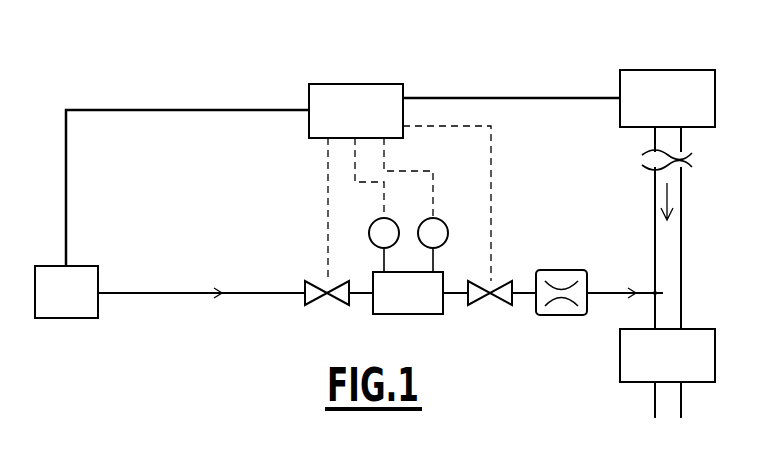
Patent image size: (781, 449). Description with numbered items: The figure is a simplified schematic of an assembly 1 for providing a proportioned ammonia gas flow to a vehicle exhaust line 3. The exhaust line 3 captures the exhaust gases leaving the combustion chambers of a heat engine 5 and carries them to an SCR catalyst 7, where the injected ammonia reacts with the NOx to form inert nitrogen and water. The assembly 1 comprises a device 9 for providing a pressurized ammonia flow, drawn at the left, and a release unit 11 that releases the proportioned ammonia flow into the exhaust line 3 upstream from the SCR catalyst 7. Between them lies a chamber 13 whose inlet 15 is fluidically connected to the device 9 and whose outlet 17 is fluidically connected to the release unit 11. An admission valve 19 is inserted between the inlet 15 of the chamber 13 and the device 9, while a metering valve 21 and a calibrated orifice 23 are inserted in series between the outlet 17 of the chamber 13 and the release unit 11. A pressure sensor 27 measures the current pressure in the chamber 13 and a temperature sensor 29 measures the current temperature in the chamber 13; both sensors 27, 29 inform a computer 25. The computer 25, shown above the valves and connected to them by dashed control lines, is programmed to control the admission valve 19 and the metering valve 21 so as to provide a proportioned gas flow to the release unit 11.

The assembly 1 is at (108, 92).
The exhaust line 3 is at (698, 217).
The heat engine 5 is at (665, 83).
The SCR catalyst 7 is at (700, 359).
The device for providing a pressurized ammonia flow 9 is at (50, 272).
The release unit 11 is at (663, 292).
The chamber 13 is at (420, 314).
The inlet 15 is at (375, 312).
The outlet 17 is at (457, 295).
The admission valve 19 is at (327, 296).
The metering valve 21 is at (490, 296).
The calibrated orifice 23 is at (565, 270).
The computer 25 is at (370, 84).
The pressure sensor 27 is at (369, 245).
The temperature sensor 29 is at (448, 231).